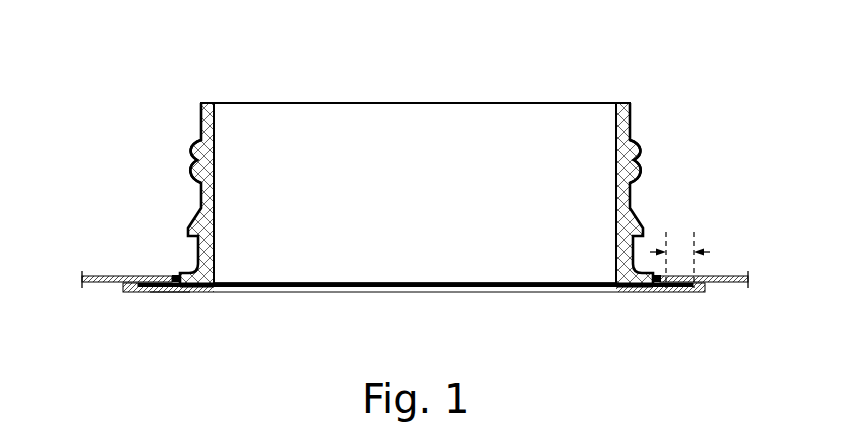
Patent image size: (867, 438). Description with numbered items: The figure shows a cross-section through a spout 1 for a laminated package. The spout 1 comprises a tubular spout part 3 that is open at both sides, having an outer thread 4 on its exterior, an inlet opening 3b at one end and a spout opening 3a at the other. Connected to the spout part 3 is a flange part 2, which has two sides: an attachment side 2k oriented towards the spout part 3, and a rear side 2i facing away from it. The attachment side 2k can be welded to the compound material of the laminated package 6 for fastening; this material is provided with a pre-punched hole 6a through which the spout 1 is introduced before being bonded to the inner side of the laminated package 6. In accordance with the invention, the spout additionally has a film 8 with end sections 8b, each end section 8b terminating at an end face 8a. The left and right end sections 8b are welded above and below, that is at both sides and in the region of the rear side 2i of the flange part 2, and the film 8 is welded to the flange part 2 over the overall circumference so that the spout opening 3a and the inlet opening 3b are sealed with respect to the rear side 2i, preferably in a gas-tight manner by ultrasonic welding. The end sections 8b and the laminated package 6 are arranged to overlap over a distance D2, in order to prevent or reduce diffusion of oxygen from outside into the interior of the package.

The spout 1 is at (649, 84).
The flange part 2 is at (123, 293).
The rear side 2i is at (168, 306).
The attachment side 2k is at (647, 260).
The spout part 3 is at (620, 123).
The spout opening 3a is at (373, 143).
The inlet opening 3b is at (270, 267).
The outer thread 4 is at (632, 153).
The laminated package 6 is at (92, 275).
The pre-punched hole 6a is at (164, 260).
The film 8 is at (462, 292).
The end face 8a is at (141, 293).
The end sections 8b is at (190, 293).
The distance D2 is at (700, 250).